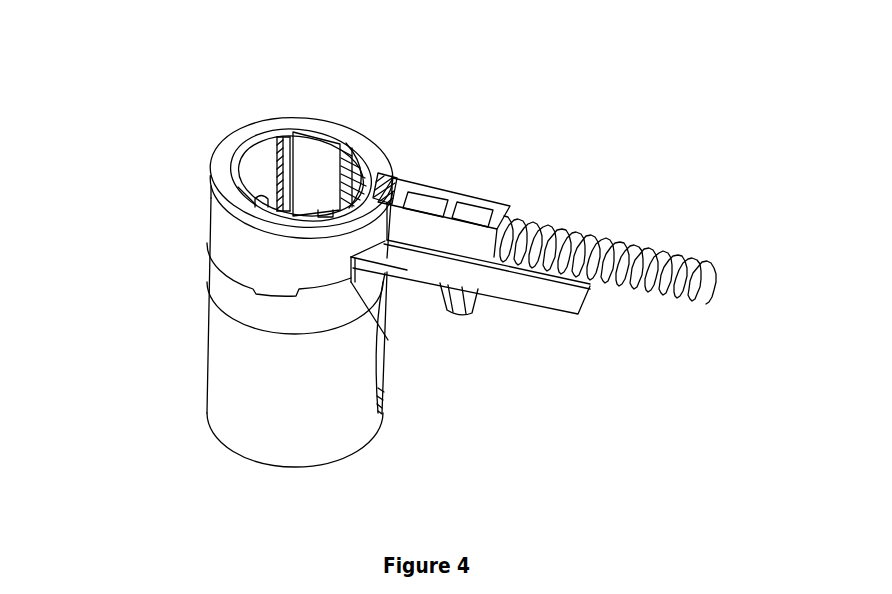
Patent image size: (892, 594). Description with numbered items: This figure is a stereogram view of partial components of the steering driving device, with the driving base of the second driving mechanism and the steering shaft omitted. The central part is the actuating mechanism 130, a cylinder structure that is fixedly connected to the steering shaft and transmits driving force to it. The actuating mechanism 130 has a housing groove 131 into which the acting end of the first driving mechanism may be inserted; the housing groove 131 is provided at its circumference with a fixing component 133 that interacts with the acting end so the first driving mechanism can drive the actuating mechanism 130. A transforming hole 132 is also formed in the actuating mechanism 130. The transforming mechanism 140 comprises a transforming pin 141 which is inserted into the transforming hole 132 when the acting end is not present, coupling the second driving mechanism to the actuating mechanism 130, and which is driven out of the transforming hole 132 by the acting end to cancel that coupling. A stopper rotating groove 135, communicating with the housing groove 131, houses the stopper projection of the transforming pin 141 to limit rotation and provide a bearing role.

The actuating mechanism 130 is at (204, 280).
The housing groove 131 is at (313, 170).
The transforming hole 132 is at (382, 180).
The fixing component 133 is at (287, 162).
The stopper rotating groove 135 is at (355, 270).
The transforming mechanism 140 is at (528, 306).
The transforming pin 141 is at (407, 266).